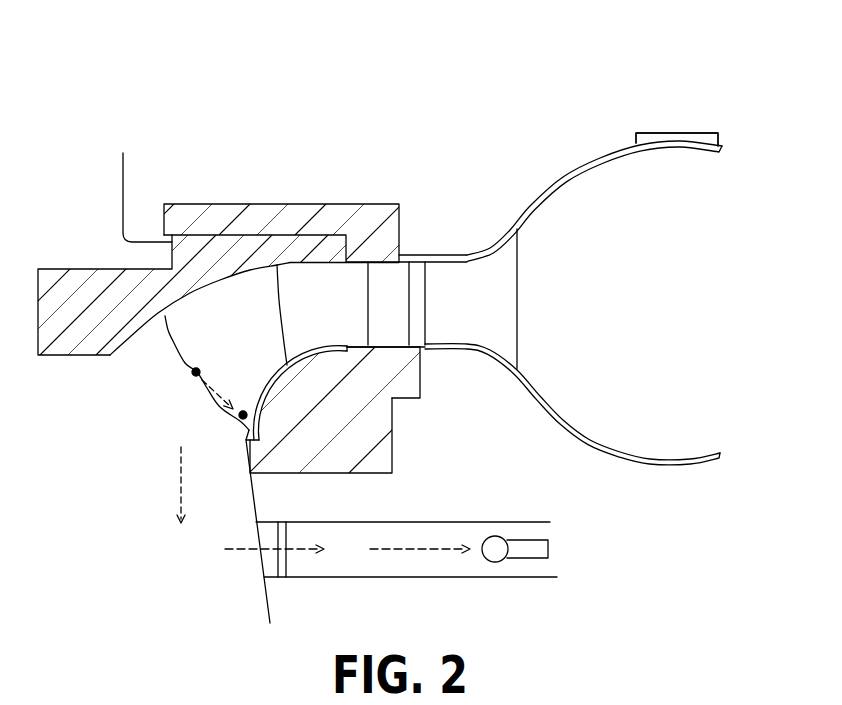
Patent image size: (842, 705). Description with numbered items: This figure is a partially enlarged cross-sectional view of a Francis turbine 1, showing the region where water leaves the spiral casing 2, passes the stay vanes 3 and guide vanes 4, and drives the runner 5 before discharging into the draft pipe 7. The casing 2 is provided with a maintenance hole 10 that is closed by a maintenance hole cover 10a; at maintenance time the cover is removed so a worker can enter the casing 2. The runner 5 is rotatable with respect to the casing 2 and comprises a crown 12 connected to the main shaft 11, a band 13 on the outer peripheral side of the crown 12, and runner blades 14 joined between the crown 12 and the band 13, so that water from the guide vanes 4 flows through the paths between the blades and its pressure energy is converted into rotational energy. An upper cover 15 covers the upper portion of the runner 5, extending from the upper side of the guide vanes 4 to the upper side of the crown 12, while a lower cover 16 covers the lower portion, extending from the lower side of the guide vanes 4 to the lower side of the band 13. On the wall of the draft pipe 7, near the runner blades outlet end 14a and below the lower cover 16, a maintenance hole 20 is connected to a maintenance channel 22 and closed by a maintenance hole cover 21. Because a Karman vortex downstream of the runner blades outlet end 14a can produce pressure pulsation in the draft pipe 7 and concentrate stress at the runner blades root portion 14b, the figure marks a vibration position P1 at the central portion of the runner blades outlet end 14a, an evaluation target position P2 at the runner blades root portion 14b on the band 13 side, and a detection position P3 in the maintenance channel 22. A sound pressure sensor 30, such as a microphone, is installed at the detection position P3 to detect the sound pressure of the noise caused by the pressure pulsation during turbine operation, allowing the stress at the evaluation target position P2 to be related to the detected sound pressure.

The Francis turbine 1 is at (749, 94).
The casing 2 is at (592, 158).
The stay vanes 3 is at (467, 268).
The guide vanes 4 is at (400, 273).
The runner 5 is at (315, 232).
The draft pipe 7 is at (270, 604).
The maintenance hole 10 is at (666, 143).
The maintenance hole cover 10a is at (677, 139).
The main shaft 11 is at (110, 178).
The crown 12 is at (218, 250).
The band 13 is at (305, 360).
The runner blades 14 is at (257, 329).
The runner blades outlet end 14a is at (177, 350).
The runner blades root portion 14b is at (243, 424).
The upper cover 15 is at (277, 221).
The lower cover 16 is at (376, 433).
The maintenance hole 20 is at (266, 532).
The maintenance hole cover 21 is at (287, 522).
The maintenance channel 22 is at (441, 522).
The sound pressure sensor 30 is at (527, 549).
The vibration position P1 is at (195, 378).
The evaluation target position P2 is at (243, 410).
The detection position P3 is at (496, 536).